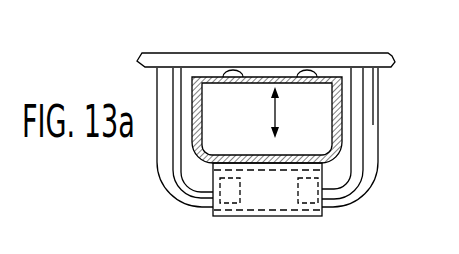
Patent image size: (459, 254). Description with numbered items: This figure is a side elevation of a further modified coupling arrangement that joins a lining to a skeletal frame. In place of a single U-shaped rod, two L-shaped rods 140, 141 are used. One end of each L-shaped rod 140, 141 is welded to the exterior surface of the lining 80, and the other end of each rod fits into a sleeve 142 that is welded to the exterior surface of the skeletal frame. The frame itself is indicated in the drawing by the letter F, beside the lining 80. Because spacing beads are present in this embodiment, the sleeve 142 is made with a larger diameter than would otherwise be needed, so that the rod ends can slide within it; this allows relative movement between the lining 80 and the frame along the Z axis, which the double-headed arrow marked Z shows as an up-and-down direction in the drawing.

The lining 80 is at (345, 17).
The L-shaped rod 140 is at (157, 172).
The L-shaped rod 141 is at (380, 161).
The sleeve 142 is at (295, 217).
The frame / insulating liner F is at (335, 127).
The Z axis Z is at (285, 112).